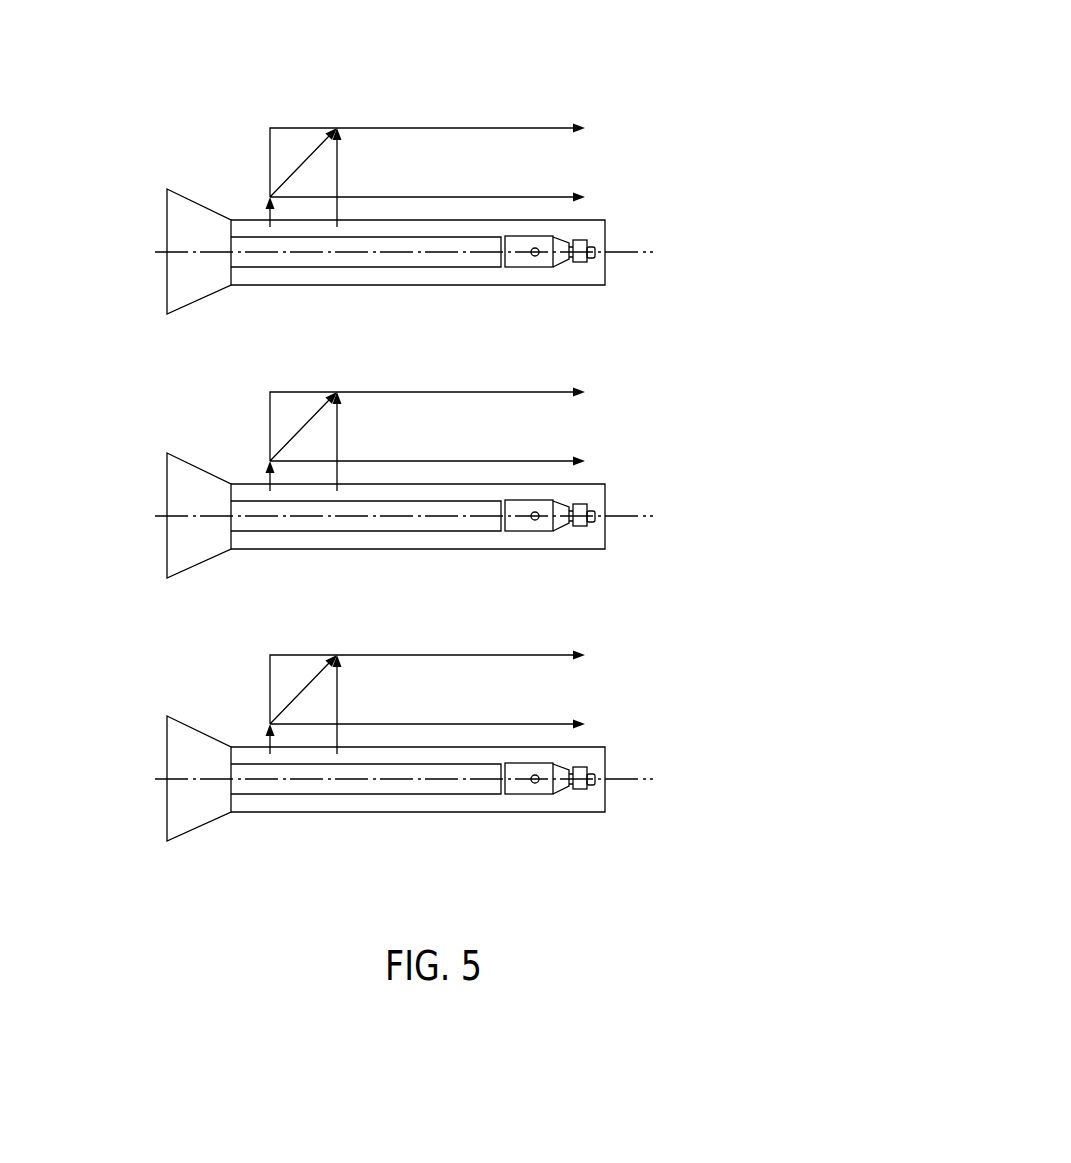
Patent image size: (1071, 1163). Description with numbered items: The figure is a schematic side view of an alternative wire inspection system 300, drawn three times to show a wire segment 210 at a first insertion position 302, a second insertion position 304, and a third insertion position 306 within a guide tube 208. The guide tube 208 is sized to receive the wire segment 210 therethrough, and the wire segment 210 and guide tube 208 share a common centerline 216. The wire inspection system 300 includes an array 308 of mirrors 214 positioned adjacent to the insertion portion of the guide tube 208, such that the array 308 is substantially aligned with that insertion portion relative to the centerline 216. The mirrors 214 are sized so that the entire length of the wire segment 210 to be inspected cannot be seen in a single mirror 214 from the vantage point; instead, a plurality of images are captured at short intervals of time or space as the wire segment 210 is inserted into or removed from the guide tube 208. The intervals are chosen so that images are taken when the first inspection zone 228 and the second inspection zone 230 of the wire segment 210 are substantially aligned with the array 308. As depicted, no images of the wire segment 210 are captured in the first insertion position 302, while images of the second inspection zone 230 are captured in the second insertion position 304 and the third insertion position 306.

The wire inspection system 300 is at (435, 428).
The first insertion position 302 is at (148, 205).
The second insertion position 304 is at (167, 486).
The third insertion position 306 is at (167, 749).
The array 308 is at (246, 126).
The mirror 214 is at (303, 128).
The wire segment 210 is at (395, 238).
The second inspection zone 230 is at (301, 277).
The first inspection zone 228 is at (561, 224).
The guide tube 208 is at (606, 236).
The centerline 216 is at (633, 255).